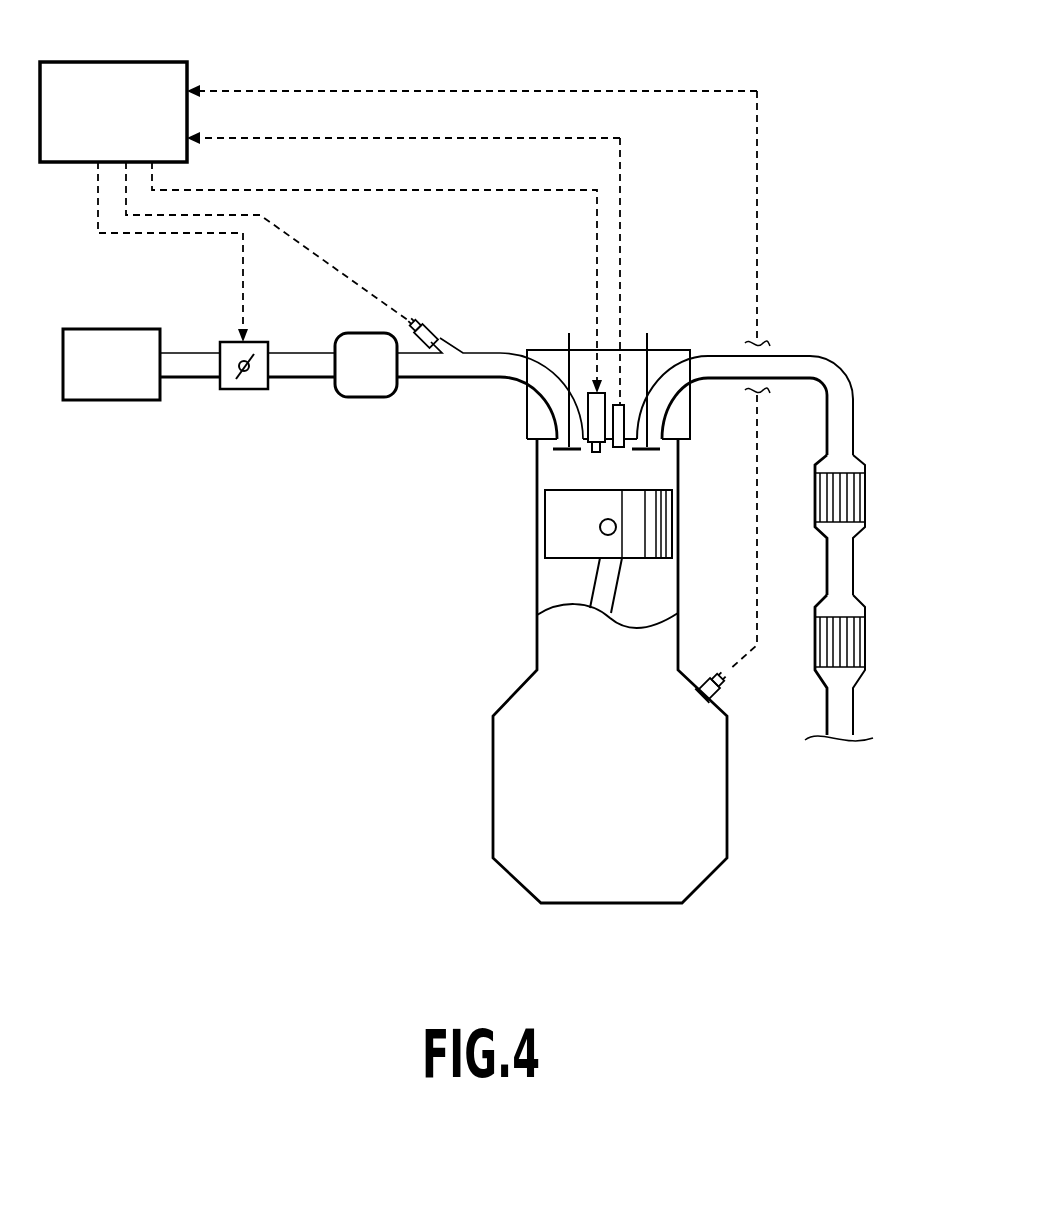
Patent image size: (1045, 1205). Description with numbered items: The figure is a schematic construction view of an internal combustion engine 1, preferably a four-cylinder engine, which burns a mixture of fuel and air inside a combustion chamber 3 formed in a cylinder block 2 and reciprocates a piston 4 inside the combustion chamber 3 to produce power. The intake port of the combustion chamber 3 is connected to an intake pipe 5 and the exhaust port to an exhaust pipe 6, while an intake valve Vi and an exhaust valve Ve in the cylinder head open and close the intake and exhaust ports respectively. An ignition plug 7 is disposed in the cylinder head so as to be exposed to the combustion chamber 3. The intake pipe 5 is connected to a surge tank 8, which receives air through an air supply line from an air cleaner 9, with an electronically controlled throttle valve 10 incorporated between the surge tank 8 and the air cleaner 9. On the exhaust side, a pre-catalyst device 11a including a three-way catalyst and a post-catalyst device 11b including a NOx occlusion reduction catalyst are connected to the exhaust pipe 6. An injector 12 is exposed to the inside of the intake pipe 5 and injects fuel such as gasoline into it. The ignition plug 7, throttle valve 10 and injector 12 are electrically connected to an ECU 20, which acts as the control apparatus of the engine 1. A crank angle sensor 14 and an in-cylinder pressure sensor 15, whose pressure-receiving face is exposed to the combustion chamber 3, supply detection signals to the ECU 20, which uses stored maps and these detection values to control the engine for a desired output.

The internal combustion engine 1 is at (324, 549).
The cylinder block 2 is at (520, 686).
The combustion chamber 3 is at (650, 468).
The piston 4 is at (546, 528).
The intake pipe 5 is at (507, 380).
The exhaust pipe 6 is at (710, 384).
The ignition plug 7 is at (586, 393).
The surge tank 8 is at (365, 400).
The air cleaner 9 is at (110, 403).
The throttle valve 10 is at (243, 393).
The pre-catalyst device 11a is at (866, 498).
The post-catalyst device 11b is at (866, 638).
The injector 12 is at (424, 325).
The crank angle sensor 14 is at (722, 690).
The in-cylinder pressure sensor 15 is at (625, 405).
The ECU 20 is at (110, 62).
The intake valve Vi is at (568, 335).
The exhaust valve Ve is at (648, 336).